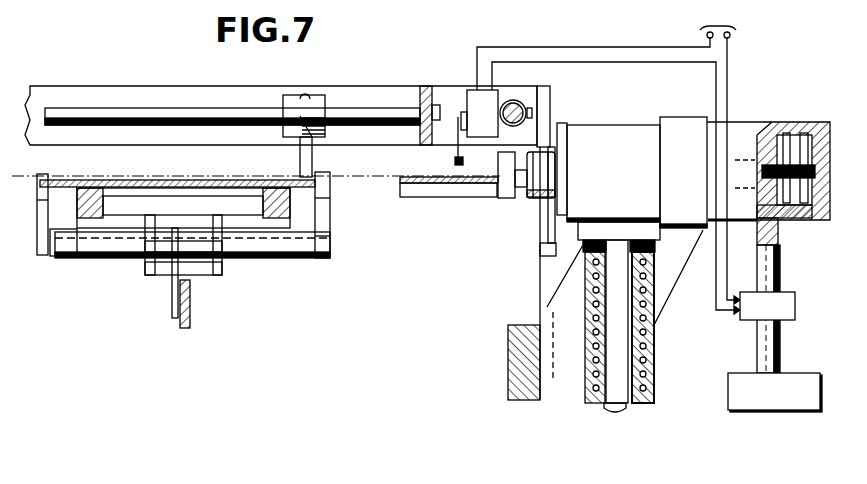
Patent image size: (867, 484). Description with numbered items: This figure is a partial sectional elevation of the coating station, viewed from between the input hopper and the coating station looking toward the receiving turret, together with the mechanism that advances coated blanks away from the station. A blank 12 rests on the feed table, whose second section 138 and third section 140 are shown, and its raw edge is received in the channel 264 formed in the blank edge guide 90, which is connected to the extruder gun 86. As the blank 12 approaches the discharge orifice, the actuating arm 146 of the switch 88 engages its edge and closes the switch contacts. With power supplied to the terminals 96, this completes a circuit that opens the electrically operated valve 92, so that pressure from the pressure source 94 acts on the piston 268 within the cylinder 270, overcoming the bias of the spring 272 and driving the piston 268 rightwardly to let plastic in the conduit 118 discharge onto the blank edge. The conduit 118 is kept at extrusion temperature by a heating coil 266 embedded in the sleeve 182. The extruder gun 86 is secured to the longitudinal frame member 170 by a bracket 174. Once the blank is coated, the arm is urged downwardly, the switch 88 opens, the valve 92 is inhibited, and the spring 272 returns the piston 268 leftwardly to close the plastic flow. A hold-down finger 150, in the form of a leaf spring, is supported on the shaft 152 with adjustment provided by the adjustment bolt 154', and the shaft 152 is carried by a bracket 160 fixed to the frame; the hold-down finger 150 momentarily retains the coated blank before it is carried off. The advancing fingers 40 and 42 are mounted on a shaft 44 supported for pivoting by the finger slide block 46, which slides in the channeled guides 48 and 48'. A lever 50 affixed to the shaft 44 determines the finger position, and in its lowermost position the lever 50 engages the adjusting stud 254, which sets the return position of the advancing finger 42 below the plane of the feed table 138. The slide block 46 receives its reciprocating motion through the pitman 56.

The blank 12 is at (328, 157).
The advancing finger 40 is at (56, 180).
The advancing finger 42 is at (330, 228).
The shaft 44 is at (37, 258).
The finger slide block 46 is at (192, 261).
The channeled guide 48 is at (63, 262).
The channeled guide 48' is at (222, 208).
The lever 50 is at (174, 258).
The pitman 56 is at (190, 320).
The extruder gun 86 is at (620, 125).
The switch 88 is at (470, 95).
The blank edge guide 90 is at (510, 200).
The electrically operated valve 92 is at (797, 320).
The pressure source 94 is at (773, 413).
The terminals 96 is at (608, 157).
The conduit 118 is at (598, 405).
The second section of feed table 138 is at (178, 180).
The third section of feed table 140 is at (425, 197).
The actuating arm 146 is at (455, 160).
The hold-down finger 150 is at (300, 163).
The shaft 152 is at (188, 108).
The carriage block 154' is at (328, 90).
The bracket 160 is at (427, 86).
The longitudinal frame member 170 is at (513, 362).
The bracket 174 is at (540, 250).
The sleeve 182 is at (655, 383).
The adjusting stud 254 is at (190, 280).
The channel 264 is at (484, 188).
The coil 266 is at (590, 298).
The piston 268 is at (800, 130).
The cylinder 270 is at (805, 125).
The spring 272 is at (815, 218).